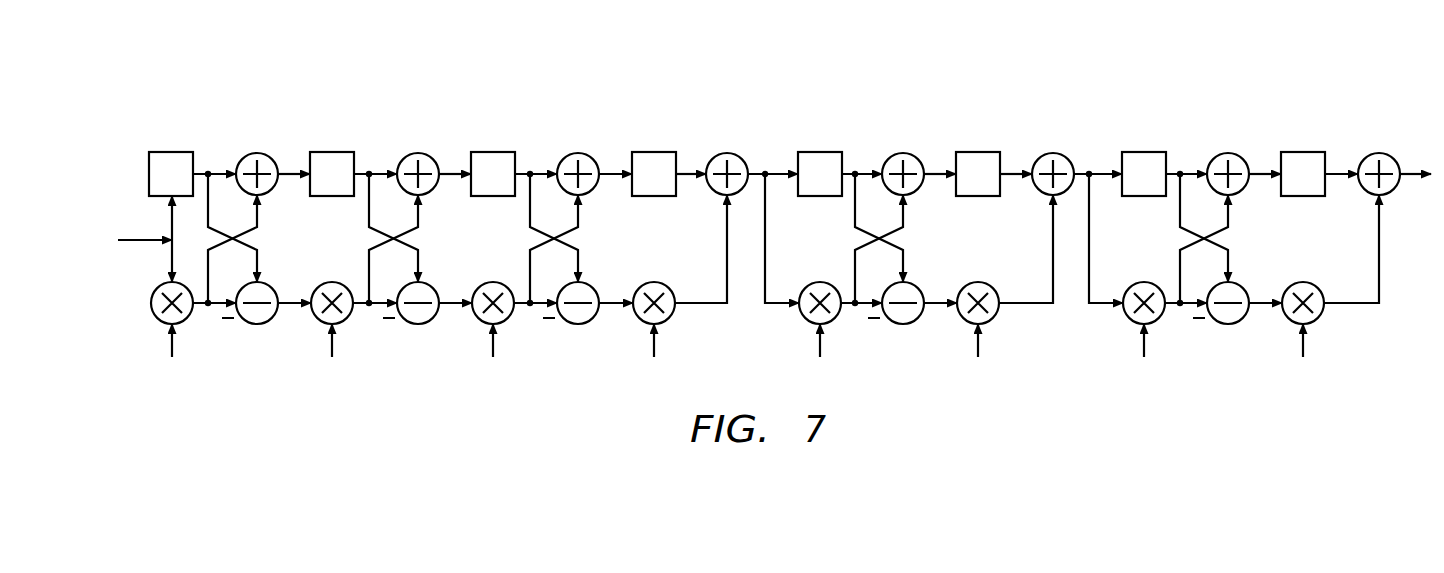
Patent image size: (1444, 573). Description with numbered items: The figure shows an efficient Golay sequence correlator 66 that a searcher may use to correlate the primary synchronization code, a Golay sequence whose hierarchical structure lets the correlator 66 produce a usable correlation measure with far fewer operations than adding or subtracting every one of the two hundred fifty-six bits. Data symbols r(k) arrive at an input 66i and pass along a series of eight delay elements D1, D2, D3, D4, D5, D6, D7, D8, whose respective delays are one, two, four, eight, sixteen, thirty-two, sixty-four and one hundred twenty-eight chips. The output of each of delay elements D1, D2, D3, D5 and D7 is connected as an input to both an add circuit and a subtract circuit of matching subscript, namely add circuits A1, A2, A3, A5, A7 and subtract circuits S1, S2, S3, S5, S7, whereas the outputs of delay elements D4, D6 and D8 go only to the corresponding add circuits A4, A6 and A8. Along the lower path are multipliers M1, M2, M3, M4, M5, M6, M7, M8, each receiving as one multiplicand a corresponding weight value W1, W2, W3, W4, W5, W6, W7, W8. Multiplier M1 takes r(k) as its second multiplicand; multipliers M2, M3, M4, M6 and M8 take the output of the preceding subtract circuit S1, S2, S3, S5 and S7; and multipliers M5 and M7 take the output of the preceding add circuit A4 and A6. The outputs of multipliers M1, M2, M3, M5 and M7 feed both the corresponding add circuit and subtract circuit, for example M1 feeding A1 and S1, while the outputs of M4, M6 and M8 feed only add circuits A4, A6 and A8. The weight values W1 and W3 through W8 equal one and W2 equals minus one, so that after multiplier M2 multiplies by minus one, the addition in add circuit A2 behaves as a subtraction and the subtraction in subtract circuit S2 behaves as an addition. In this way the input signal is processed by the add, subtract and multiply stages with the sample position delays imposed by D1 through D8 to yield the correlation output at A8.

The efficient Golay sequence correlator 66 is at (357, 113).
The input 66i is at (137, 237).
The delay element D1 is at (171, 174).
The delay element D2 is at (332, 174).
The delay element D3 is at (493, 174).
The delay element D4 is at (654, 174).
The delay element D5 is at (820, 174).
The delay element D6 is at (978, 174).
The delay element D7 is at (1144, 174).
The delay element D8 is at (1303, 174).
The add circuit A1 is at (257, 159).
The add circuit A2 is at (418, 159).
The add circuit A3 is at (578, 159).
The add circuit A4 is at (727, 159).
The add circuit A5 is at (903, 159).
The add circuit A6 is at (1053, 159).
The add circuit A7 is at (1228, 159).
The add circuit A8 is at (1379, 159).
The multiplier M1 is at (157, 303).
The multiplier M2 is at (332, 287).
The multiplier M3 is at (493, 287).
The multiplier M4 is at (654, 287).
The multiplier M5 is at (820, 287).
The multiplier M6 is at (978, 287).
The multiplier M7 is at (1144, 287).
The multiplier M8 is at (1303, 287).
The subtract circuit S1 is at (250, 322).
The subtract circuit S2 is at (411, 322).
The subtract circuit S3 is at (571, 322).
The subtract circuit S5 is at (896, 322).
The subtract circuit S7 is at (1221, 322).
The weight value W1 is at (171, 358).
The weight value W2 is at (331, 358).
The weight value W3 is at (492, 358).
The weight value W4 is at (653, 358).
The weight value W5 is at (819, 358).
The weight value W6 is at (977, 358).
The weight value W7 is at (1143, 358).
The weight value W8 is at (1302, 358).